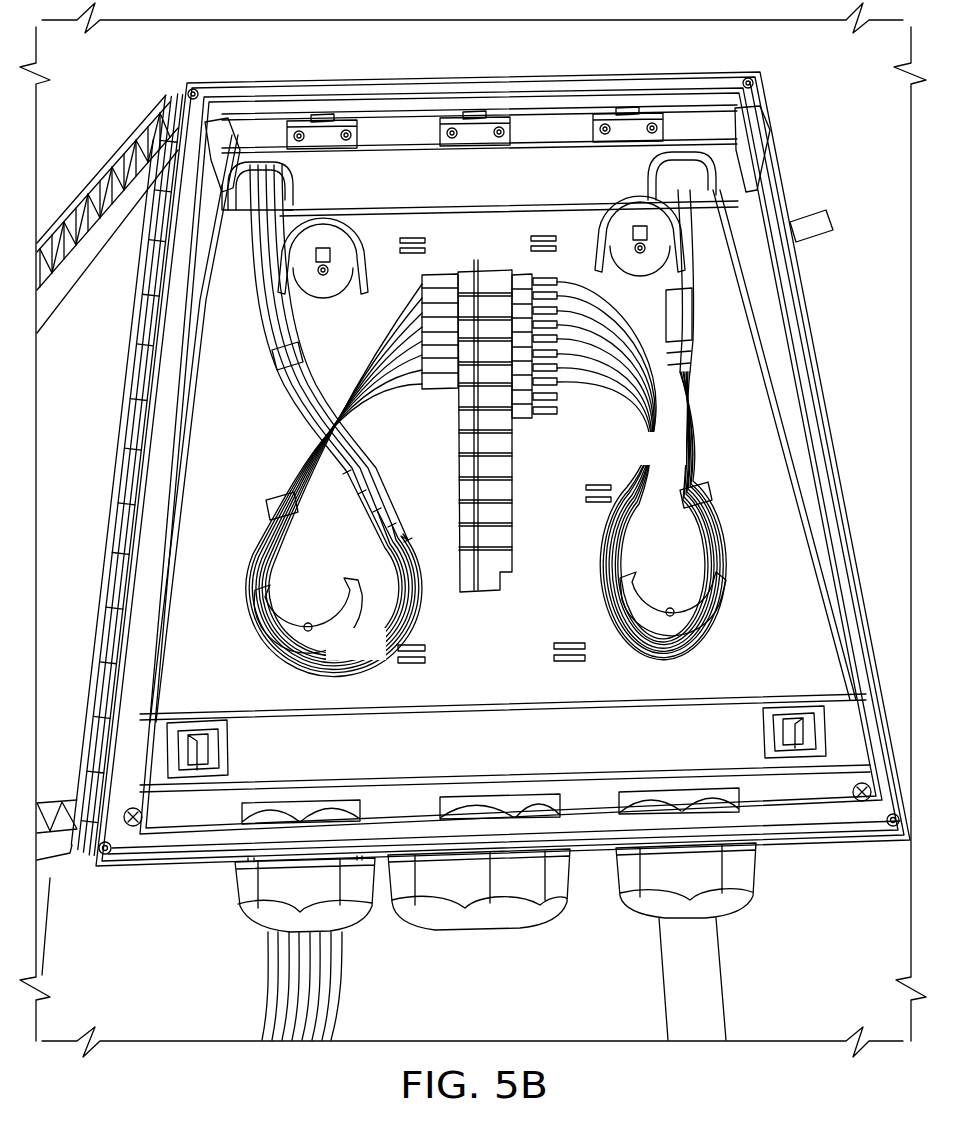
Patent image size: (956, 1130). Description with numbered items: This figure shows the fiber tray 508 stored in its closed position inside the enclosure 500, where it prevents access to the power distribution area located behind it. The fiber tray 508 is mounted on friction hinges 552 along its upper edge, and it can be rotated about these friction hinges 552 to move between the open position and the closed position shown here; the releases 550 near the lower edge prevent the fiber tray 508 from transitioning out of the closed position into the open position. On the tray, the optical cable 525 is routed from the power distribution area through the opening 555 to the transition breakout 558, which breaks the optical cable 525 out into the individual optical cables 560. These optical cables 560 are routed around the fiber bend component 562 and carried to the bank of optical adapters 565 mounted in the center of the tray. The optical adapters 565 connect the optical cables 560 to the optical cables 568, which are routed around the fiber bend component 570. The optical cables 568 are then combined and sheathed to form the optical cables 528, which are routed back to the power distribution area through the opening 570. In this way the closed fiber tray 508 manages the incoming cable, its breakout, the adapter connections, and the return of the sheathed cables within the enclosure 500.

The enclosure 500 is at (812, 166).
The fiber tray 508 is at (520, 670).
The optical cable 525 is at (680, 208).
The optical cables 528 is at (257, 340).
The releases 550 is at (226, 740).
The friction hinges 552 is at (495, 118).
The opening 555 is at (657, 176).
The transition breakout 558 is at (693, 320).
The optical cables 560 is at (683, 464).
The fiber bend component 562 is at (684, 626).
The bank of optical adapters 565 is at (497, 574).
The optical cables 568 is at (381, 660).
The fiber bend component 570 is at (288, 190).